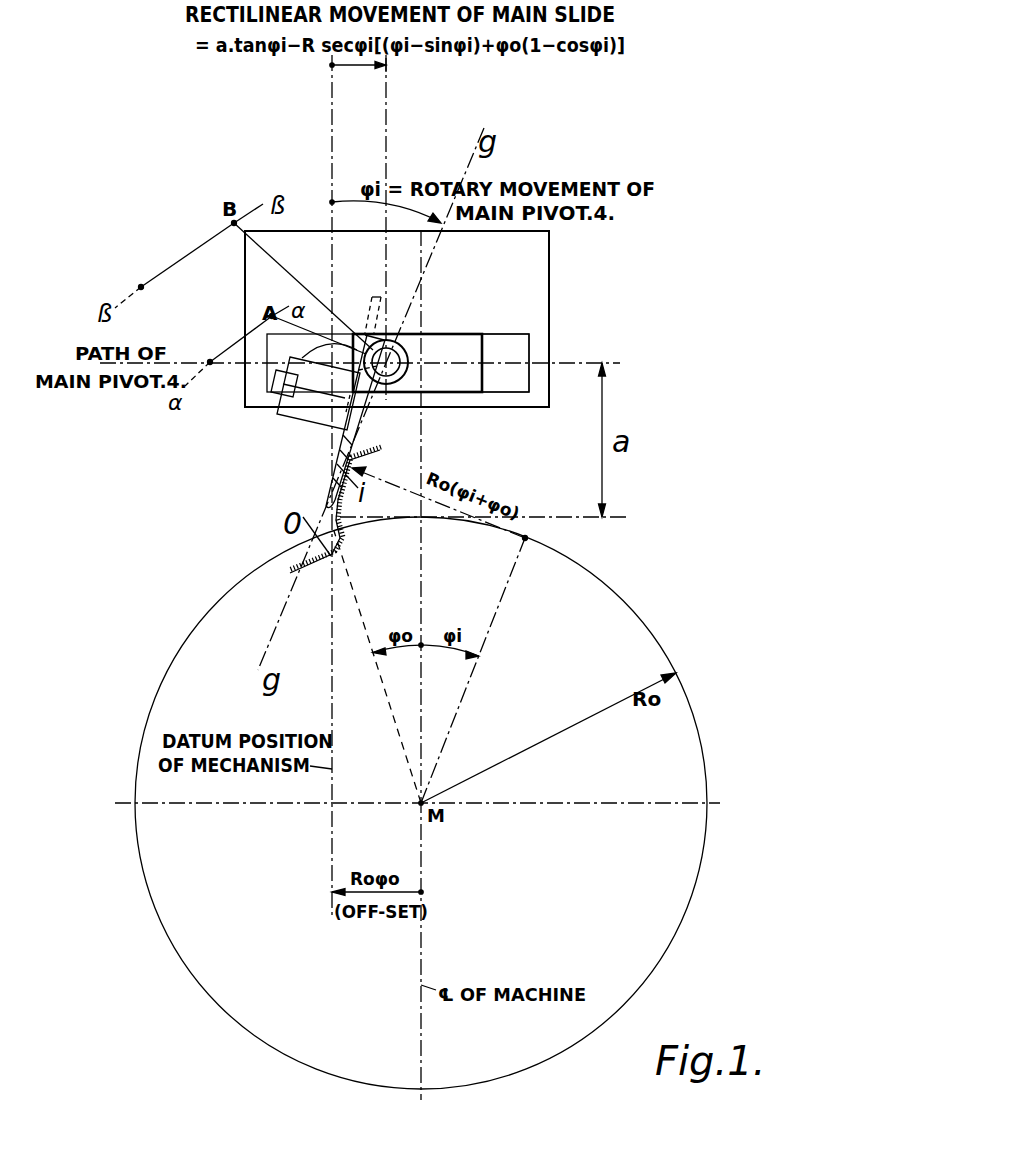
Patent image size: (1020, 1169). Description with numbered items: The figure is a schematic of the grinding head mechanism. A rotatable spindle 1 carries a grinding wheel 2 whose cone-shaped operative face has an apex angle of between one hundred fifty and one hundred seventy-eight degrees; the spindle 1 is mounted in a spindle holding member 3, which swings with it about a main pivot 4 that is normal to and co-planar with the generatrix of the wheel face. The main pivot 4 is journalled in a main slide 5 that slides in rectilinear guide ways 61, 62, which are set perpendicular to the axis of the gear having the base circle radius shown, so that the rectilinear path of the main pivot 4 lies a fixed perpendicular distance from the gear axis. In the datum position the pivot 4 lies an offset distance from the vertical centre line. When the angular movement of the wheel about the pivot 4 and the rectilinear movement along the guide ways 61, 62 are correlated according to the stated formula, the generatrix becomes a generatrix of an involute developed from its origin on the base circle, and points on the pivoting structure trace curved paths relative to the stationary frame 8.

The rotatable spindle 1 is at (307, 415).
The grinding wheel 2 is at (357, 428).
The spindle holding member 3 is at (338, 352).
The main pivot 4 is at (392, 368).
The main slide 5 is at (453, 347).
The rectilinear guide way 61 is at (503, 332).
The rectilinear guide way 62 is at (500, 395).
The frame 8 is at (528, 258).